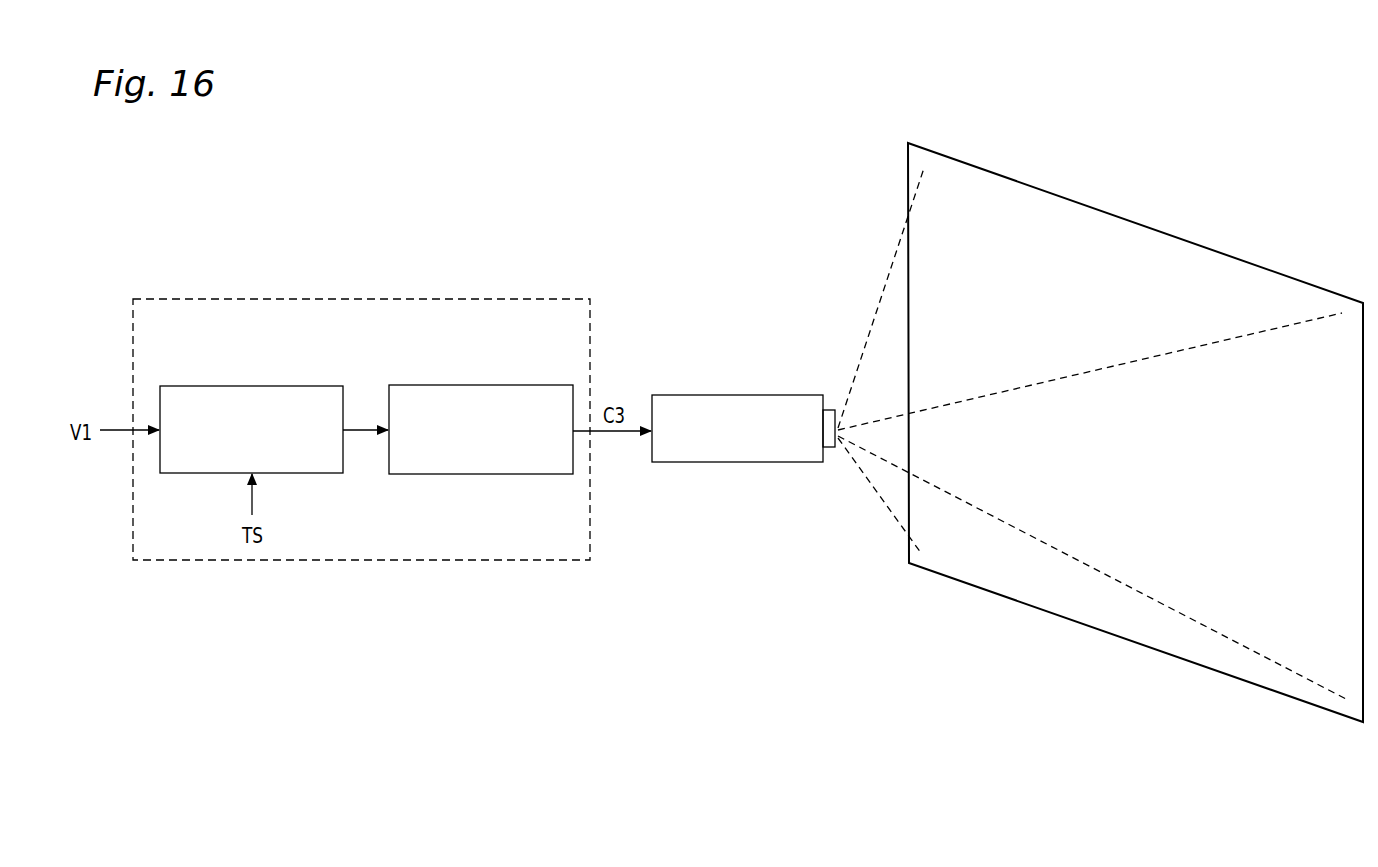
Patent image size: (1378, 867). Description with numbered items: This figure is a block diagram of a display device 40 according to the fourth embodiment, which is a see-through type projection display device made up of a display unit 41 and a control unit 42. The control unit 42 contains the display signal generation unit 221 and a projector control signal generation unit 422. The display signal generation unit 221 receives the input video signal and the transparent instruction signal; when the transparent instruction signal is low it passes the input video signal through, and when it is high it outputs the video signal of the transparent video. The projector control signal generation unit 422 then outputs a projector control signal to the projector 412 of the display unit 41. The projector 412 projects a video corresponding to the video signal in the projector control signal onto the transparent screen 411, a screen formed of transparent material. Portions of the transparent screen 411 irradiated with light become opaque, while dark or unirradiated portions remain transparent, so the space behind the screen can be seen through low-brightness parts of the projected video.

The display device 40 is at (549, 186).
The control unit 42 is at (355, 299).
The display signal generation unit 221 is at (251, 386).
The projector control signal generation unit 422 is at (479, 385).
The display unit 41 is at (778, 277).
The transparent screen 411 is at (908, 348).
The projector 412 is at (737, 395).